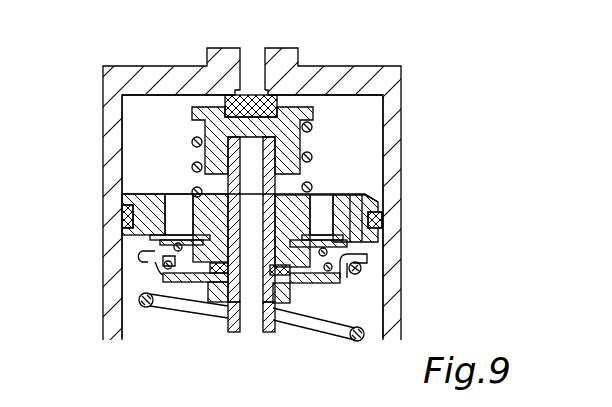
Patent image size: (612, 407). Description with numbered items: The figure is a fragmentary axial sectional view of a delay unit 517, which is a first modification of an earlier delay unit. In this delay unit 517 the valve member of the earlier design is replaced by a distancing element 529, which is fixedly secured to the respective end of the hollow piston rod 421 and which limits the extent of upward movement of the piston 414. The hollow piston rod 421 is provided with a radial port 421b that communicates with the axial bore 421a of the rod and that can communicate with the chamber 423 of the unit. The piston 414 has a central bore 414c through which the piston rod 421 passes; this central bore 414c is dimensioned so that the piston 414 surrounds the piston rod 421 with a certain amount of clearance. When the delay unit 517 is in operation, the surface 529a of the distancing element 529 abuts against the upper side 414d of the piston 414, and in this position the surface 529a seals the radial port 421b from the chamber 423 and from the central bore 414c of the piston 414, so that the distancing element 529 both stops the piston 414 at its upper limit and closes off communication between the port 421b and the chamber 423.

The delay unit 517 is at (481, 61).
The chamber 423 is at (170, 124).
The distancing element 529 is at (292, 147).
The surface of the distancing element 529a is at (288, 178).
The radial port 421b is at (226, 189).
The axial bore 421a is at (261, 333).
The upper side of the piston 414d is at (149, 191).
The piston 414 is at (122, 229).
The central bore of the piston 414c is at (222, 259).
The hollow piston rod 421 is at (277, 308).